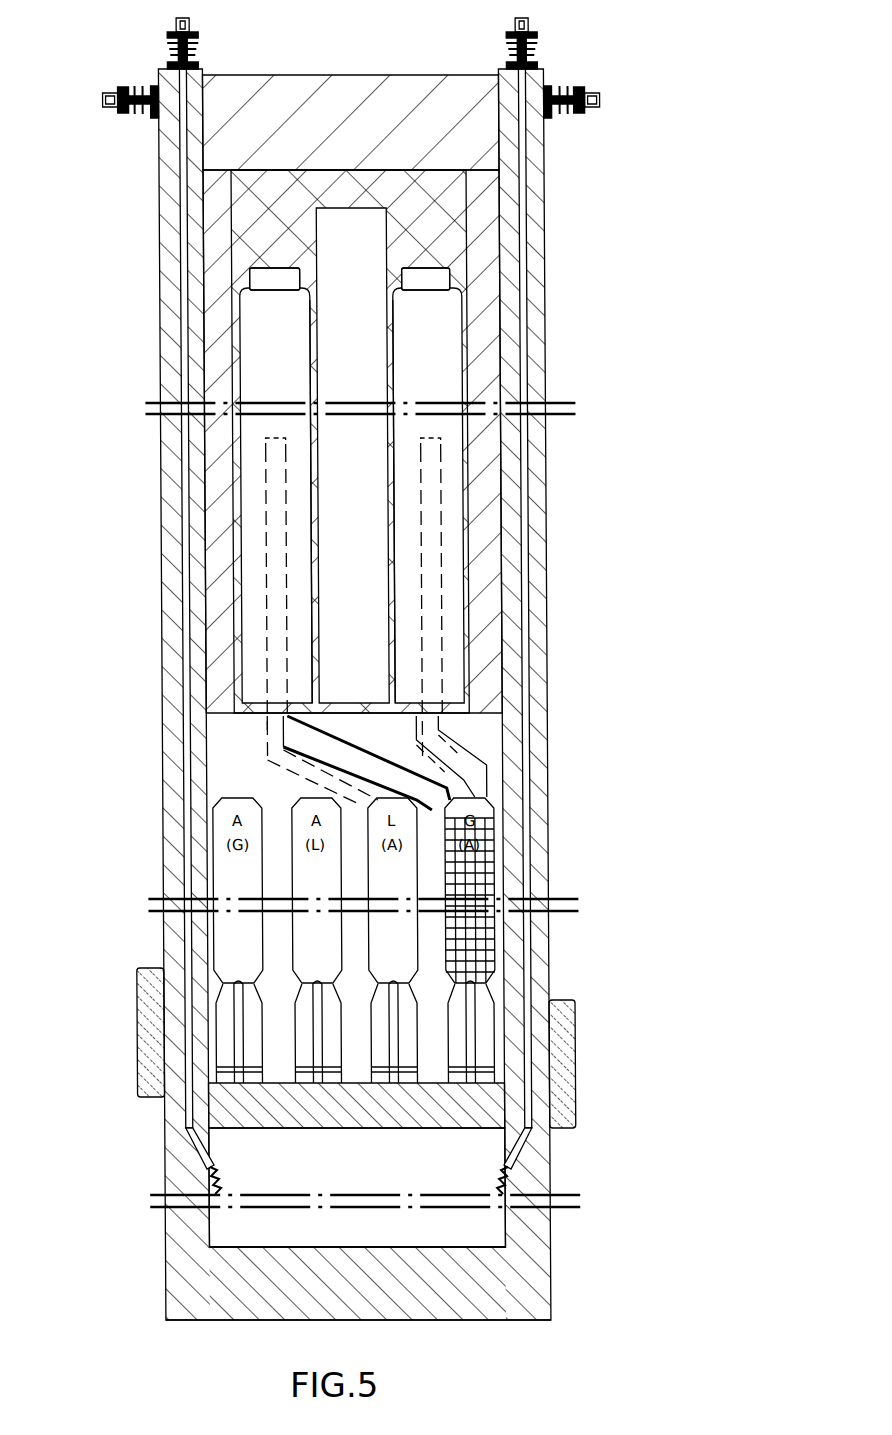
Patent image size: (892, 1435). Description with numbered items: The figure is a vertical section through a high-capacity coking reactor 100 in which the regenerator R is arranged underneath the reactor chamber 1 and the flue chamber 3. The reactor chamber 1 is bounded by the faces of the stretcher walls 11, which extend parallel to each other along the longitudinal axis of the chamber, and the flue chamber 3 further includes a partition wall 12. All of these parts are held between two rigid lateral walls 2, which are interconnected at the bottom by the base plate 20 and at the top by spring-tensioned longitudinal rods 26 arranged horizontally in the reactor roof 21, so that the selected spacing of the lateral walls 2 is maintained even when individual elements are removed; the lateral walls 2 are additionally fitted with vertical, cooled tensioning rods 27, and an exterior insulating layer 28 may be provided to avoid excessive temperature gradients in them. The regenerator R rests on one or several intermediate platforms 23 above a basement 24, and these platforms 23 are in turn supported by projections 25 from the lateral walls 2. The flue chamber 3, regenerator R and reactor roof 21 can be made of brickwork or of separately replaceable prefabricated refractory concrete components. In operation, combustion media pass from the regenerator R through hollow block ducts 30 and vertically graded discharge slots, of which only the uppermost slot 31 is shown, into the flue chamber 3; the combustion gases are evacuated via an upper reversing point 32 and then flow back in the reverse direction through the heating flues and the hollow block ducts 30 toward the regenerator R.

The reactor chamber 1 is at (351, 253).
The rigid lateral walls 2 is at (543, 570).
The flue chamber 3 is at (277, 351).
The stretcher wall 11 is at (392, 527).
The partition wall 12 is at (470, 487).
The base plate 20 is at (545, 1272).
The reactor roof 21 is at (385, 75).
The intermediate platform 23 is at (493, 1094).
The basement 24 is at (369, 1174).
The projections 25 is at (505, 1150).
The spring-tensioned longitudinal rods 26 is at (600, 98).
The cooled tensioning rods 27 is at (530, 32).
The exterior insulating layer 28 is at (570, 1032).
The hollow block ducts 30 is at (435, 645).
The uppermost discharge slot 31 is at (437, 440).
The upper reversing point 32 is at (430, 282).
The high-capacity coking reactor 100 is at (560, 320).
The regenerator R is at (467, 877).